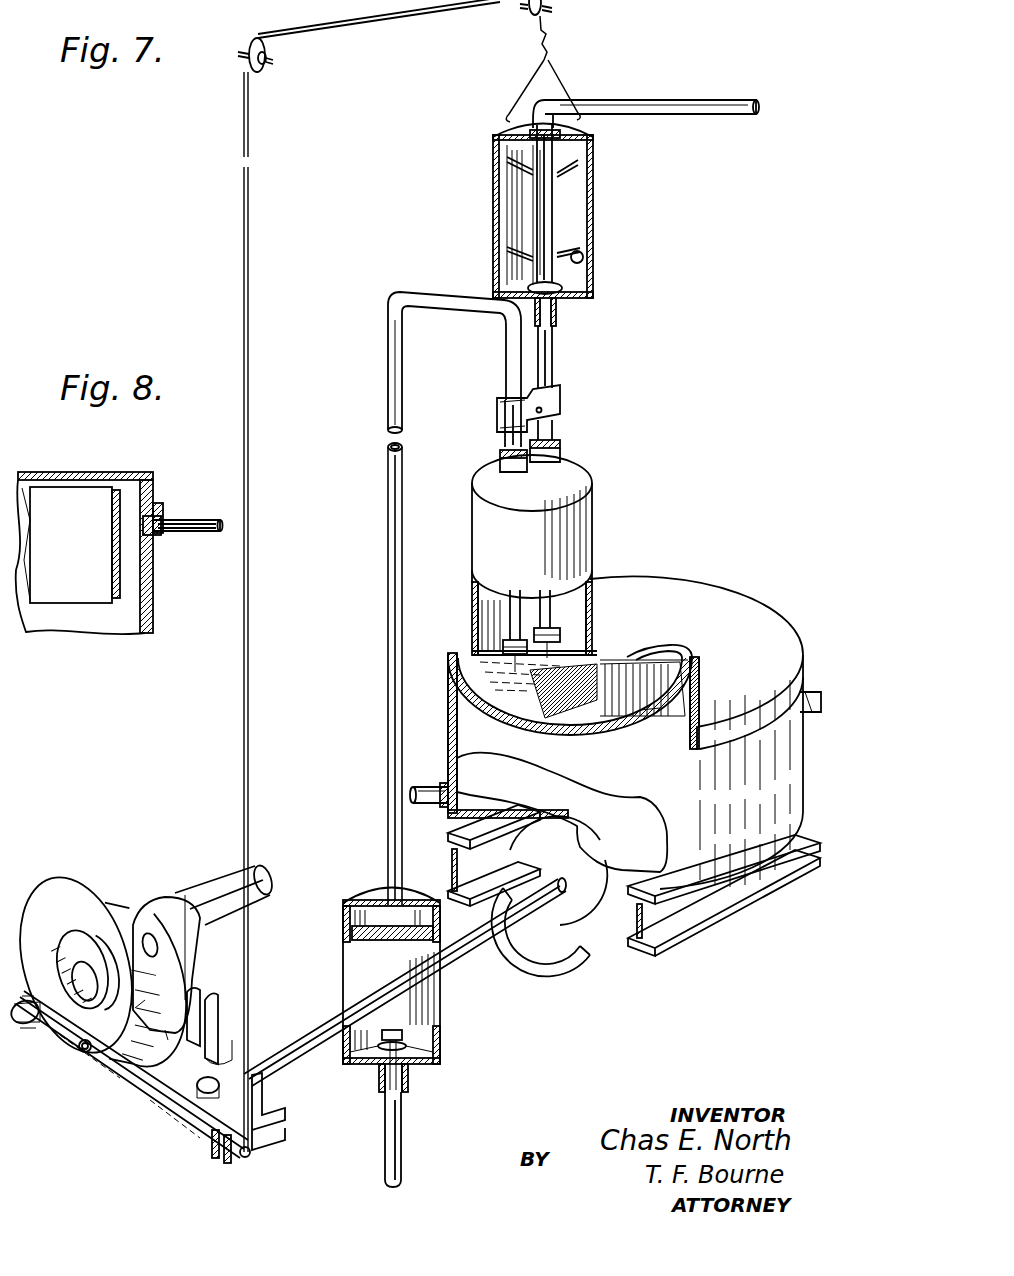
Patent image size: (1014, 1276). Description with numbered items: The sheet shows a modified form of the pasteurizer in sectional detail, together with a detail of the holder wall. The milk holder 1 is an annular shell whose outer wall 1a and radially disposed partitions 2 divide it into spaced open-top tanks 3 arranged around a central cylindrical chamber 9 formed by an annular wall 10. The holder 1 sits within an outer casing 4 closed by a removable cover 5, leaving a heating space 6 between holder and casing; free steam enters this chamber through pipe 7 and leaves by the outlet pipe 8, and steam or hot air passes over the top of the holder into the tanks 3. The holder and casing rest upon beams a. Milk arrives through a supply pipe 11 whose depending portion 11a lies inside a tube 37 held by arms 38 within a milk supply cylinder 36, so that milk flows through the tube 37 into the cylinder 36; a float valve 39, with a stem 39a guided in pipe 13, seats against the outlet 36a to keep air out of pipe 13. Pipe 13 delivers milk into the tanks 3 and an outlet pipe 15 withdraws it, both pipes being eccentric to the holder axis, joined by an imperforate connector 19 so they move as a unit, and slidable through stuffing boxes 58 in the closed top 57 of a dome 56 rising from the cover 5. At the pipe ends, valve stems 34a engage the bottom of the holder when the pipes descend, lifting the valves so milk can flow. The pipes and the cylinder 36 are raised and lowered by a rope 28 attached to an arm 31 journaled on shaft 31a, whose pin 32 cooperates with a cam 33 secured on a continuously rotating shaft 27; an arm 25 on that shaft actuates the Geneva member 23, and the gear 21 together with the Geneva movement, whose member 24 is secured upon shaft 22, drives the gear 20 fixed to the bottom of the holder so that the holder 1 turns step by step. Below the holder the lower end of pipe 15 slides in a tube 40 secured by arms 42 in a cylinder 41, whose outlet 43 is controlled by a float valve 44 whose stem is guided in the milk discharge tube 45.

In FIG. 7, the milk holder 1 is at (692, 700).
In FIG. 8, the milk holder 1 is at (110, 567).
In FIG. 7, the outer wall of the holder 1a is at (680, 712).
In FIG. 7, the partitions 2 is at (600, 665).
In FIG. 8, the partitions 2 is at (62, 505).
In FIG. 7, the containers or tanks 3 is at (631, 689).
In FIG. 7, the outer casing 4 is at (456, 712).
In FIG. 8, the outer casing 4 is at (142, 615).
In FIG. 7, the removable cover 5 is at (696, 663).
In FIG. 8, the removable cover 5 is at (132, 472).
In FIG. 7, the heating chamber 6 is at (473, 683).
In FIG. 8, the heating chamber 6 is at (132, 565).
In FIG. 7, the steam inlet pipe 7 is at (428, 790).
In FIG. 7, the steam outlet pipe 8 is at (812, 690).
In FIG. 8, the steam outlet pipe 8 is at (200, 532).
In FIG. 7, the central cylindrical chamber 9 is at (645, 652).
In FIG. 7, the annular wall 10 is at (640, 660).
In FIG. 7, the milk supply pipe 11 is at (716, 108).
In FIG. 7, the depending portion of supply pipe 11a is at (540, 192).
In FIG. 7, the milk delivery pipe 13 is at (556, 372).
In FIG. 7, the milk outlet pipe 15 is at (505, 392).
In FIG. 7, the imperforate connector 19 is at (562, 402).
In FIG. 7, the holder gear 20 is at (590, 852).
In FIG. 7, the driving gear 21 is at (582, 930).
In FIG. 7, the shaft 22 is at (520, 920).
In FIG. 7, the Geneva movement member 23 is at (540, 960).
In FIG. 7, the Geneva movement member 24 is at (205, 1050).
In FIG. 7, the arm 25 is at (185, 975).
In FIG. 7, the shaft 27 is at (225, 886).
In FIG. 7, the rope 28 is at (402, 14).
In FIG. 7, the arm 31 is at (160, 1090).
In FIG. 7, the shaft 31a is at (30, 1024).
In FIG. 7, the projection or pin 32 is at (86, 1054).
In FIG. 7, the cam 33 is at (70, 930).
In FIG. 7, the valve stem 34a is at (555, 635).
In FIG. 7, the milk supply cylinder 36 is at (590, 228).
In FIG. 7, the cylinder outlet seat 36a is at (505, 325).
In FIG. 7, the tube 37 is at (560, 196).
In FIG. 7, the arms 38 is at (590, 259).
In FIG. 7, the float valve 39 is at (540, 318).
In FIG. 7, the float valve stem 39a is at (556, 318).
In FIG. 7, the tube 40 is at (380, 895).
In FIG. 7, the cylinder 41 is at (442, 1004).
In FIG. 7, the arms 42 is at (352, 930).
In FIG. 7, the cylinder outlet 43 is at (410, 1072).
In FIG. 7, the float valve 44 is at (406, 1046).
In FIG. 7, the milk discharge tube 45 is at (395, 1148).
In FIG. 7, the dome 56 is at (594, 520).
In FIG. 7, the closed top of dome 57 is at (575, 482).
In FIG. 7, the stuffing box 58 is at (562, 452).
In FIG. 7, the beams a is at (452, 866).